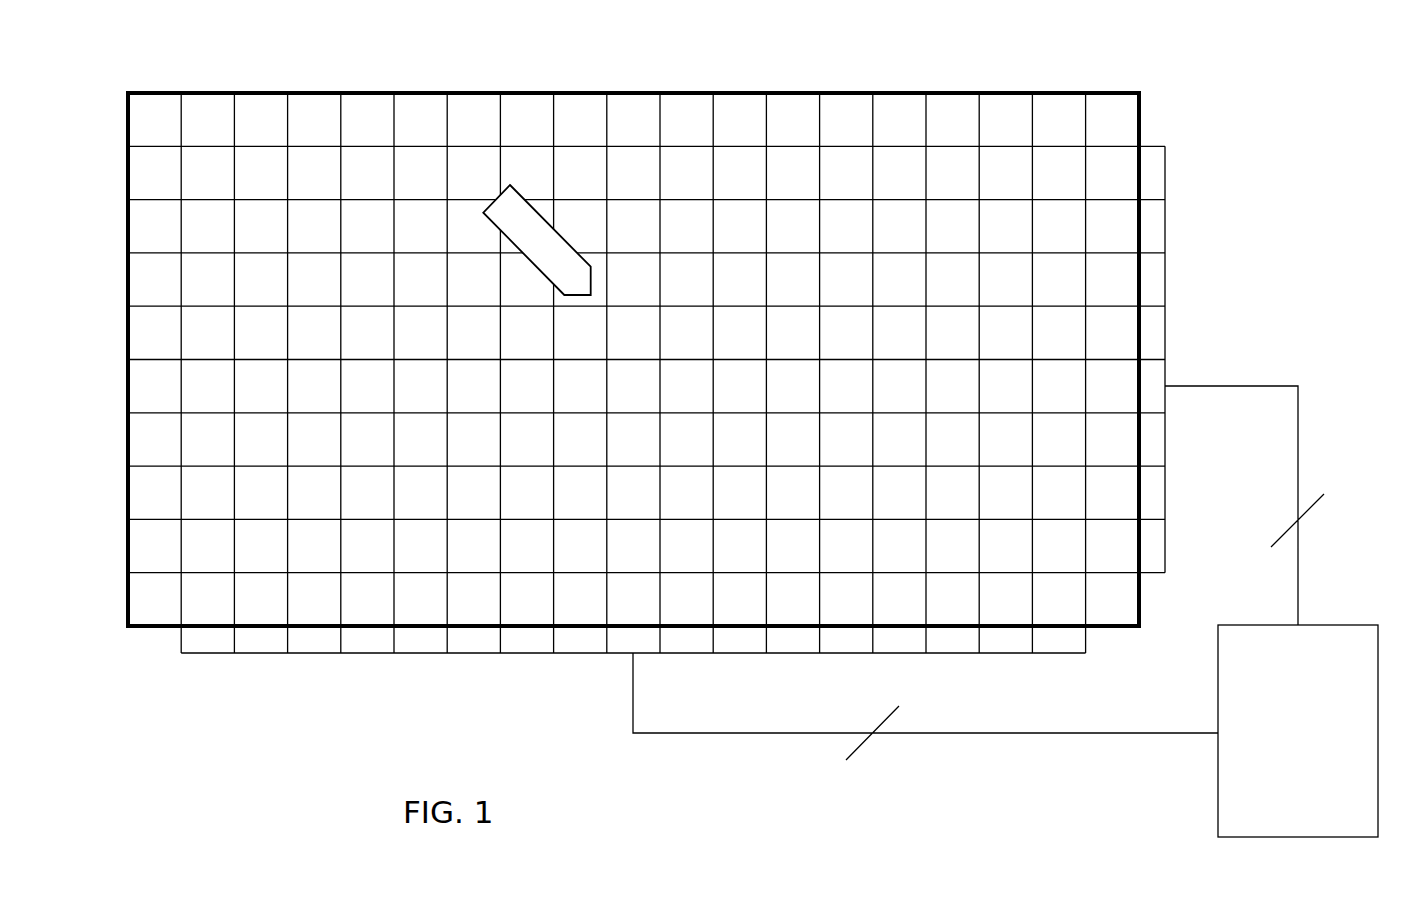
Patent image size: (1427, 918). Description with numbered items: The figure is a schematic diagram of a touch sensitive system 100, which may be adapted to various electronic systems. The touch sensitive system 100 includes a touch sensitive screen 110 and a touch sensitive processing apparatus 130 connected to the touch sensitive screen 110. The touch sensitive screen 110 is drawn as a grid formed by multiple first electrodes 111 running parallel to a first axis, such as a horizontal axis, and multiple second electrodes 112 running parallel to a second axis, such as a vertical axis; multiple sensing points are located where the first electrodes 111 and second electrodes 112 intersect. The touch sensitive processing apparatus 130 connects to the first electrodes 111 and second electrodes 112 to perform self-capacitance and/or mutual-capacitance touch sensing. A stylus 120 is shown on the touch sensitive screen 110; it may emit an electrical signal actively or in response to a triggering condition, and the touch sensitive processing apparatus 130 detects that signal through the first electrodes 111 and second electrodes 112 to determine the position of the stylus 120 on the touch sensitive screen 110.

The touch sensitive system 100 is at (1265, 133).
The touch sensitive screen 110 is at (706, 445).
The first electrodes 111 is at (1112, 305).
The second electrodes 112 is at (452, 600).
The stylus 120 is at (510, 185).
The touch sensitive processing apparatus 130 is at (1280, 742).